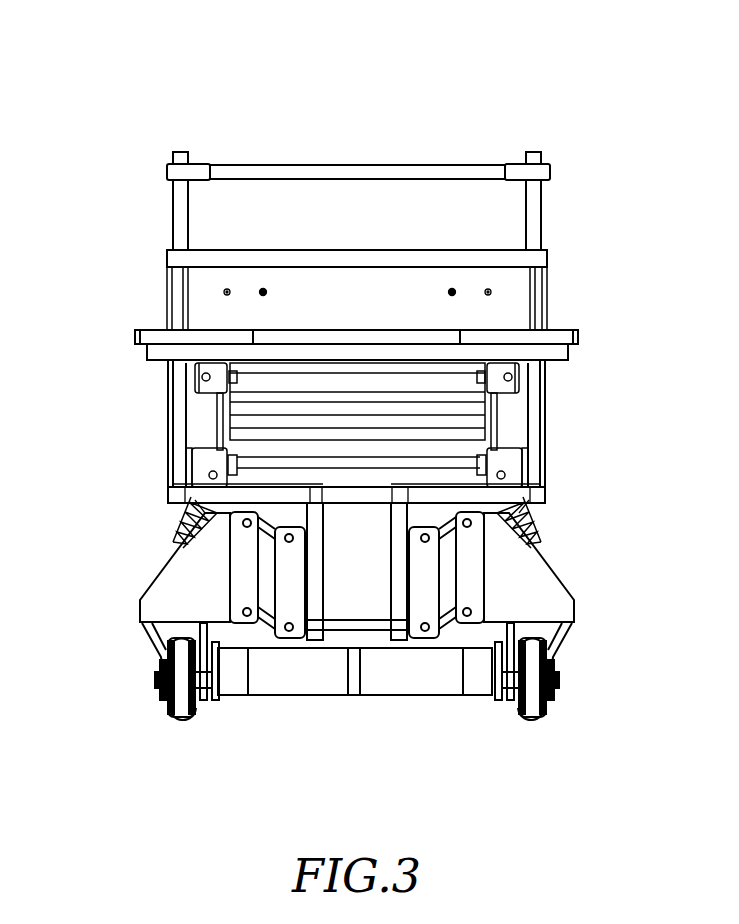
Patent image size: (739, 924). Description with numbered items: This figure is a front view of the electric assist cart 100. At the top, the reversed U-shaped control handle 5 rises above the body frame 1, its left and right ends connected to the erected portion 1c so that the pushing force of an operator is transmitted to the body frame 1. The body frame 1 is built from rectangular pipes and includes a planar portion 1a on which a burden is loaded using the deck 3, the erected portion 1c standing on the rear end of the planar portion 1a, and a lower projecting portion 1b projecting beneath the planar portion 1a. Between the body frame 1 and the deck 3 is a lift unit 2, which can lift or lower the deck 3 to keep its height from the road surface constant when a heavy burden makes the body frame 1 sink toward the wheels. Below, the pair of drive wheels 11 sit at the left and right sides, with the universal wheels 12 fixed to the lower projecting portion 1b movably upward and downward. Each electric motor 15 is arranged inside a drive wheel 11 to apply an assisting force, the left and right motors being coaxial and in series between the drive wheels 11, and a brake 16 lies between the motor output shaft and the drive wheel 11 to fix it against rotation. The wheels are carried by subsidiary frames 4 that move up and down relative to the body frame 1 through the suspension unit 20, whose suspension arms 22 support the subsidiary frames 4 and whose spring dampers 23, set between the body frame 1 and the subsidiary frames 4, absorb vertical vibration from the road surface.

The electric assist cart 100 is at (597, 115).
The body frame 1 is at (556, 453).
The planar portion 1a is at (538, 493).
The lower projecting portion 1b is at (362, 632).
The erected portion 1c is at (537, 417).
The lift unit 2 is at (206, 412).
The deck 3 is at (380, 327).
The subsidiary frame 4 is at (158, 595).
The control handle 5 is at (286, 175).
The drive wheel 11 is at (176, 700).
The universal wheel 12 is at (187, 717).
The electric motor 15 is at (308, 682).
The brake 16 is at (233, 680).
The suspension unit 20 is at (167, 552).
The suspension arm 22 is at (262, 530).
The spring damper 23 is at (183, 523).